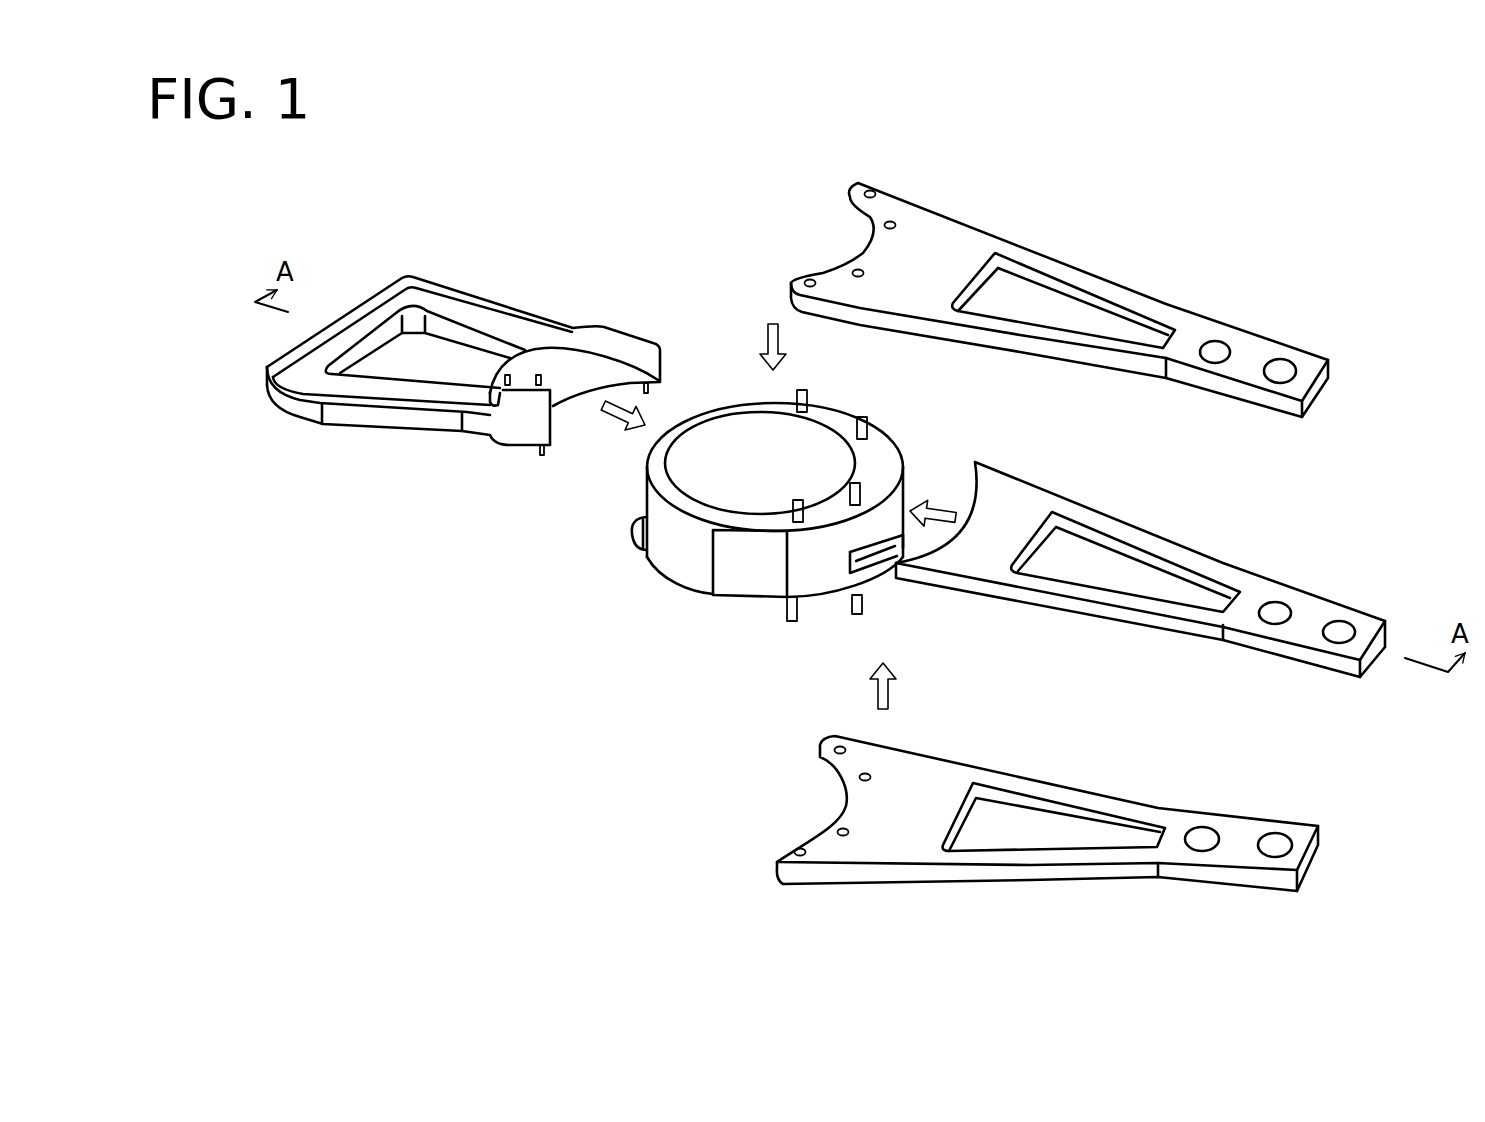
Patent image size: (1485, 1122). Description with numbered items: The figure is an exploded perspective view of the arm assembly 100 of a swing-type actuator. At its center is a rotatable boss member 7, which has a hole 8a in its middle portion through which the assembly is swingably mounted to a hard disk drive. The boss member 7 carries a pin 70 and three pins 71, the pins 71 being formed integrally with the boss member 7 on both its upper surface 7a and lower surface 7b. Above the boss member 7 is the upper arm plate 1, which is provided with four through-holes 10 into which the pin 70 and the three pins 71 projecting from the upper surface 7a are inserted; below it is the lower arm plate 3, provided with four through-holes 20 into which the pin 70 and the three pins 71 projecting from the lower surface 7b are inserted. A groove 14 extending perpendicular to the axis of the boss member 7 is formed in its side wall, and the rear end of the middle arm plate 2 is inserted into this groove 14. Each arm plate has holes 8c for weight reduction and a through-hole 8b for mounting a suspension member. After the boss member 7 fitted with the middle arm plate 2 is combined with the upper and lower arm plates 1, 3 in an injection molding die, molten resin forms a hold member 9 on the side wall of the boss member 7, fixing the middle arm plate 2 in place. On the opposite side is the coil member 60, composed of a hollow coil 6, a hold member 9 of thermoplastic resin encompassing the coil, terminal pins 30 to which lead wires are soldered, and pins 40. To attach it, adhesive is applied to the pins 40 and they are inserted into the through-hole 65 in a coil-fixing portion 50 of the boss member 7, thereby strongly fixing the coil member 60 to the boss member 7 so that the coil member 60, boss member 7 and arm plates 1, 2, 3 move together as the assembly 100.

The upper arm plate 1 is at (985, 240).
The middle arm plate 2 is at (1045, 497).
The lower arm plate 3 is at (935, 760).
The hollow coil 6 is at (360, 393).
The boss member 7 is at (675, 545).
The upper surface 7a is at (894, 455).
The lower surface 7b is at (748, 598).
The hole 8a is at (710, 443).
The through-hole 8b is at (1285, 366).
The holes for weight reduction 8c is at (442, 348).
The hold member 9 is at (268, 390).
The through-holes 10 is at (812, 279).
The groove 14 is at (868, 555).
The through-holes 20 is at (862, 780).
The terminal pins 30 is at (509, 375).
The pins 40 is at (540, 457).
The coil-fixing portion 50 is at (660, 552).
The coil member 60 is at (415, 265).
The through-hole 65 is at (640, 540).
The pin 70 is at (806, 392).
The pins 71 is at (857, 484).
The arm assembly 100 is at (735, 378).